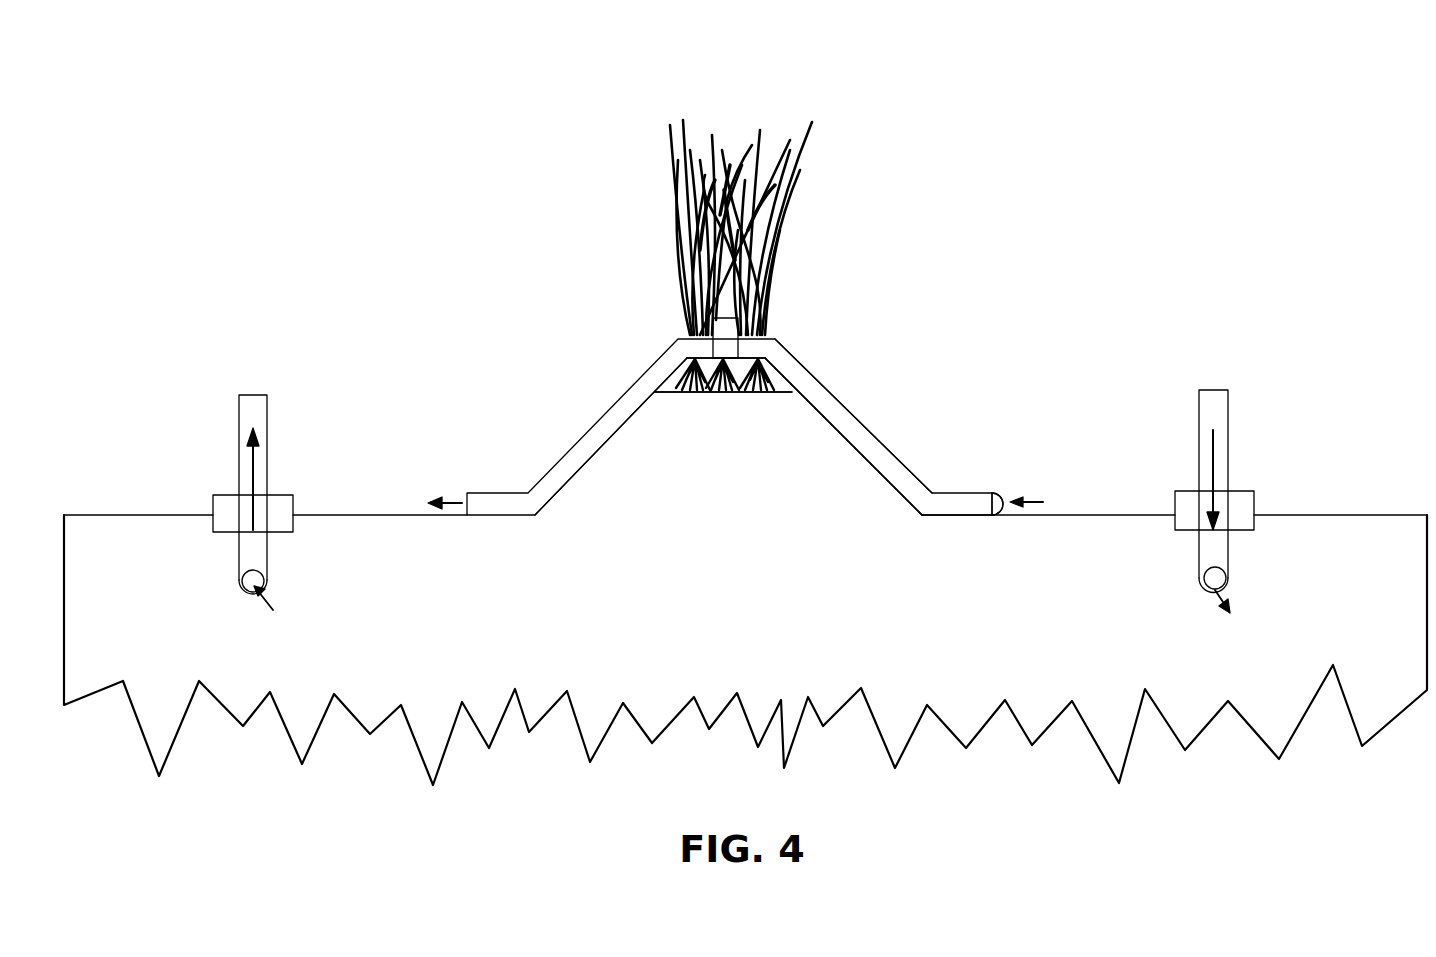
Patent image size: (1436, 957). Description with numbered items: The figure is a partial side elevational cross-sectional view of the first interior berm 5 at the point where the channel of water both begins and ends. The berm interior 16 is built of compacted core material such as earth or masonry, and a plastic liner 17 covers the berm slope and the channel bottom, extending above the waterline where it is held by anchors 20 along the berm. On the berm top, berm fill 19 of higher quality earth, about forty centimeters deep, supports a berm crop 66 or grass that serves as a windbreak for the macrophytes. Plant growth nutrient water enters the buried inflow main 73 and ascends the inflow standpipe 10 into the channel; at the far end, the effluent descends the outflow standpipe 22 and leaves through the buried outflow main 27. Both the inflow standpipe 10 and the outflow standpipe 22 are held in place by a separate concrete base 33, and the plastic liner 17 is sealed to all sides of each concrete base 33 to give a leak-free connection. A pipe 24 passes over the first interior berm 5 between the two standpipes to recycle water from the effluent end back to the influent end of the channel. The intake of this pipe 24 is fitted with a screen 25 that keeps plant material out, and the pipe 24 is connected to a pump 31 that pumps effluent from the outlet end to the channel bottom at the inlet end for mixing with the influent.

The first interior berm 5 is at (907, 456).
The inflow standpipe 10 is at (238, 422).
The berm interior 16 is at (772, 467).
The plastic liner 17 is at (832, 422).
The berm fill 19 is at (708, 393).
The anchors 20 is at (793, 402).
The outflow standpipe 22 is at (1229, 412).
The pipe 24 is at (622, 393).
The screen 25 is at (998, 508).
The buried outflow main 27 is at (1225, 585).
The pump 31 is at (725, 333).
The concrete base 33 is at (285, 500).
The berm crop 66 is at (722, 143).
The buried inflow main 73 is at (263, 597).